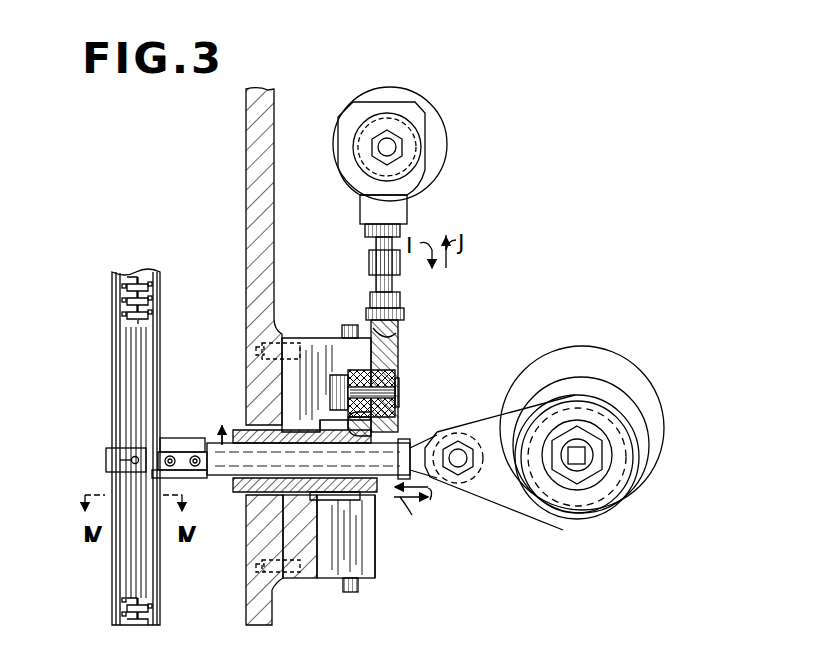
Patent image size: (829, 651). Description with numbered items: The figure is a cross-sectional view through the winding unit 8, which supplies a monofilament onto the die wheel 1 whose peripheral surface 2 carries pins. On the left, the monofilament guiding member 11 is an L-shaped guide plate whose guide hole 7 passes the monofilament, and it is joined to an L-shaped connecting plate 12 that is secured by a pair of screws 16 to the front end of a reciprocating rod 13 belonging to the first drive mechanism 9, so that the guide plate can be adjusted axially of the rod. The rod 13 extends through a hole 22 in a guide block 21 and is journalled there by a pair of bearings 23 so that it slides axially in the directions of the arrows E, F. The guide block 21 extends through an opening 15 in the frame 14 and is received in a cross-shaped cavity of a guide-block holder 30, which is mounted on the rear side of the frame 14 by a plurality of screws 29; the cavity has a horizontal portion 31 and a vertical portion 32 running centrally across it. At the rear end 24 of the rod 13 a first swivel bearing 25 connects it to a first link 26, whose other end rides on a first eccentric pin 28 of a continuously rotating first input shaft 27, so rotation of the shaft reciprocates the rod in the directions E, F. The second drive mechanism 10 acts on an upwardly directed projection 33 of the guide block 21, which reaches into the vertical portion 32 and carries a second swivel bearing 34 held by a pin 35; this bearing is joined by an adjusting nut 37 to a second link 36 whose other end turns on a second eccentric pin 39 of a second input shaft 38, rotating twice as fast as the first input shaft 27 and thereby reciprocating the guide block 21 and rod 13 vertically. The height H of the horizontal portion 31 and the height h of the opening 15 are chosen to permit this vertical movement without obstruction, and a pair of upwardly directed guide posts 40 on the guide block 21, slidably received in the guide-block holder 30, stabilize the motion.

The die wheel 1 is at (110, 575).
The peripheral surface 2 is at (120, 606).
The guide hole 7 is at (131, 457).
The winding unit 8 is at (105, 458).
The first drive mechanism 9 is at (390, 441).
The second drive mechanism 10 is at (400, 348).
The monofilament guiding member 11 is at (106, 462).
The connecting plate 12 is at (188, 478).
The reciprocating rod 13 is at (373, 575).
The frame 14 is at (246, 112).
The opening 15 is at (238, 402).
The screws 16 is at (183, 438).
The guide block 21 is at (323, 442).
The hole 22 is at (310, 493).
The bearings 23 is at (234, 478).
The rear end 24 is at (412, 432).
The first swivel bearing 25 is at (446, 437).
The first link 26 is at (518, 505).
The first input shaft 27 is at (530, 372).
The first eccentric pin 28 is at (580, 462).
The screws 29 is at (262, 352).
The guide-block holder 30 is at (372, 535).
The horizontal portion 31 is at (305, 540).
The vertical portion 32 is at (340, 348).
The upwardly directed projection 33 is at (386, 362).
The second swivel bearing 34 is at (392, 385).
The pin 35 is at (394, 402).
The second link 36 is at (396, 215).
The adjusting nut 37 is at (369, 262).
The second input shaft 38 is at (385, 89).
The second eccentric pin 39 is at (392, 147).
The upwardly directed guide posts 40 is at (348, 325).
The width or height of the horizontal groove H is at (328, 505).
The height of the opening h is at (201, 402).
The direction of rod movement E is at (419, 501).
The direction of rod movement F is at (411, 516).